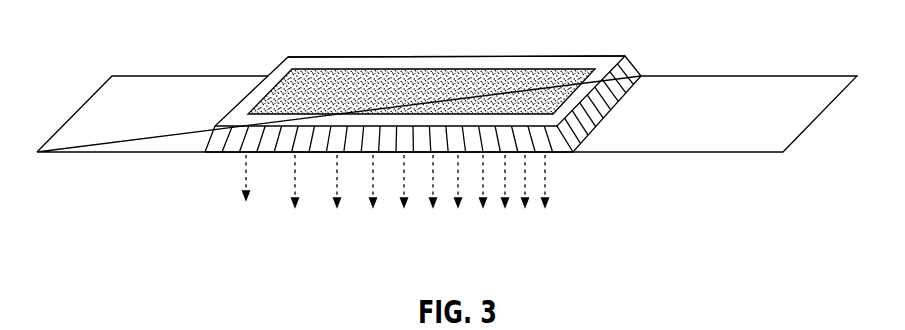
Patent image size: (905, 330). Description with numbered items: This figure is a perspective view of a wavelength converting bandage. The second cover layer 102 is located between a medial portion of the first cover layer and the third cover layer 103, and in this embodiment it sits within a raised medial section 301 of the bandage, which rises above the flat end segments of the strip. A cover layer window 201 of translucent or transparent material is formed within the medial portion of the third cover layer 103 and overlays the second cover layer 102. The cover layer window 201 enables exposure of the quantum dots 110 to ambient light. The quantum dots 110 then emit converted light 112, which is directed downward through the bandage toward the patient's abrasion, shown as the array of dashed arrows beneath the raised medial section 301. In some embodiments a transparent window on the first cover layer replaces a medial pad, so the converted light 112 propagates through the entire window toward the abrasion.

The third cover layer 103 is at (270, 78).
The cover layer window 201 is at (335, 58).
The second cover layer 102 is at (473, 72).
The quantum dots 110 is at (547, 72).
The raised medial section 301 is at (630, 70).
The converted light 112 is at (400, 182).